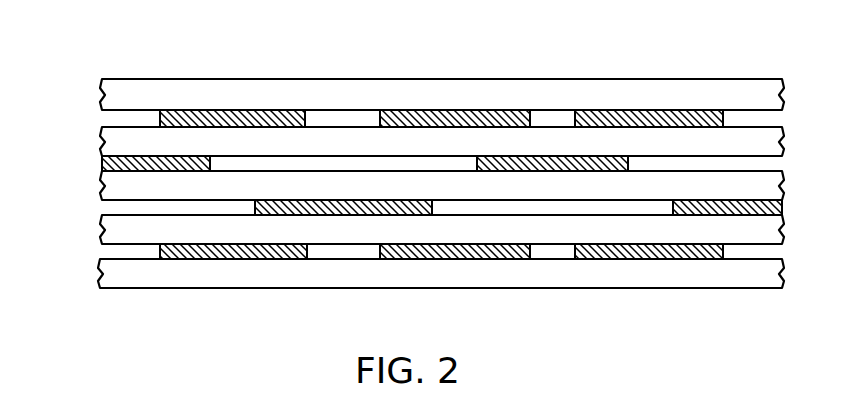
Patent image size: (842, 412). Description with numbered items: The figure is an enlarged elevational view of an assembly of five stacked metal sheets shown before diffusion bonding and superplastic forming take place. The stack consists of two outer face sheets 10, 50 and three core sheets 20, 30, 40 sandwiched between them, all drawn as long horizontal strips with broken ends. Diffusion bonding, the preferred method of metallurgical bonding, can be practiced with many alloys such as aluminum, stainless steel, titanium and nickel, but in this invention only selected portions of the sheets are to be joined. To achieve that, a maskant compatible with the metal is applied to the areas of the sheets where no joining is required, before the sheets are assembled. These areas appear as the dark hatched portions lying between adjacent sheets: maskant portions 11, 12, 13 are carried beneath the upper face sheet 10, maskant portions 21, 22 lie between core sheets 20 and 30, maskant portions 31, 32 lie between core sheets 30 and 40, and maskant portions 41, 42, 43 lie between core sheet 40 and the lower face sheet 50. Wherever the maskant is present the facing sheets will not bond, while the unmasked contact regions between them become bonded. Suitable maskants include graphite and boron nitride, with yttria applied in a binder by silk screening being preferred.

The face sheet 10 is at (110, 92).
The core sheet 20 is at (112, 141).
The core sheet 30 is at (110, 183).
The core sheet 40 is at (108, 233).
The face sheet 50 is at (107, 272).
The maskant 11 is at (243, 118).
The maskant 12 is at (413, 117).
The maskant 13 is at (670, 118).
The maskant 21 is at (150, 163).
The maskant 22 is at (547, 157).
The maskant 31 is at (333, 208).
The maskant 32 is at (710, 208).
The maskant 41 is at (205, 258).
The maskant 42 is at (490, 260).
The maskant 43 is at (613, 256).